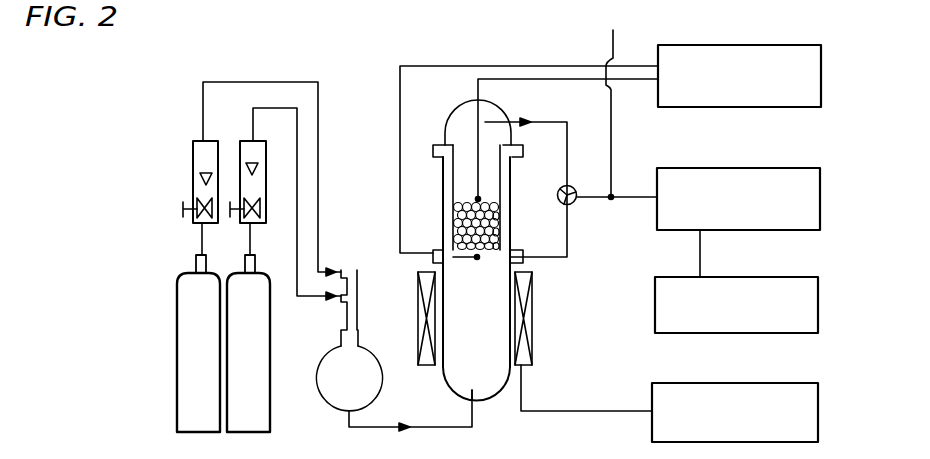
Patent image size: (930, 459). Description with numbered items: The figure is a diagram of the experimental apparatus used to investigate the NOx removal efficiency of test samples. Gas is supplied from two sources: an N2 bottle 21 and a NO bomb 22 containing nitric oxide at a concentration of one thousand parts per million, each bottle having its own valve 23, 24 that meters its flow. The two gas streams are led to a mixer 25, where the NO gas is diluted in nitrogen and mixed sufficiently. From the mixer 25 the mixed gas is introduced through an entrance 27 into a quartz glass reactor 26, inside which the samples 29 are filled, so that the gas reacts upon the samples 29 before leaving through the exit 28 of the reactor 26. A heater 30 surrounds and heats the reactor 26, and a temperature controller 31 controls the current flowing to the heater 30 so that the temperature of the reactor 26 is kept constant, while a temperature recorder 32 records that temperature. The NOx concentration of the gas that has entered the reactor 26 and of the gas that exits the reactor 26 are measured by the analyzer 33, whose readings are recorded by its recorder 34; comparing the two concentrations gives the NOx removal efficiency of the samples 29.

The N2 bottle 21 is at (196, 355).
The NO bomb 22 is at (260, 355).
The valve 23 is at (193, 224).
The valve 24 is at (260, 210).
The mixer 25 is at (340, 397).
The quartz glass reactor 26 is at (453, 210).
The entrance 27 is at (473, 392).
The exit 28 is at (612, 44).
The samples 29 is at (490, 217).
The heater 30 is at (528, 322).
The temperature controller 31 is at (770, 384).
The temperature recorder 32 is at (763, 47).
The analyzer 33 is at (772, 170).
The recorder 34 is at (769, 278).